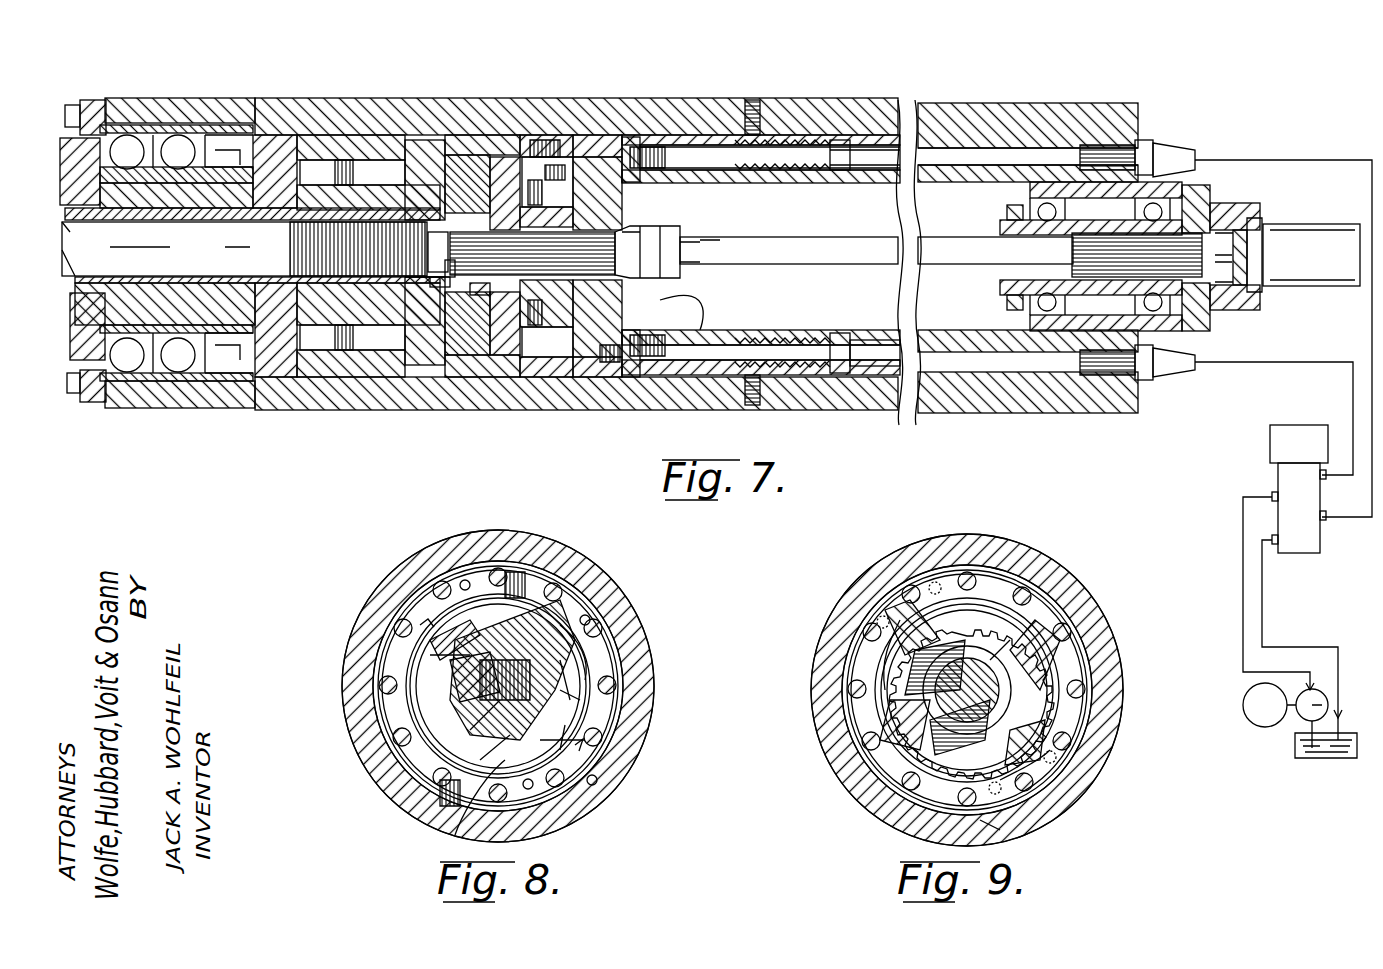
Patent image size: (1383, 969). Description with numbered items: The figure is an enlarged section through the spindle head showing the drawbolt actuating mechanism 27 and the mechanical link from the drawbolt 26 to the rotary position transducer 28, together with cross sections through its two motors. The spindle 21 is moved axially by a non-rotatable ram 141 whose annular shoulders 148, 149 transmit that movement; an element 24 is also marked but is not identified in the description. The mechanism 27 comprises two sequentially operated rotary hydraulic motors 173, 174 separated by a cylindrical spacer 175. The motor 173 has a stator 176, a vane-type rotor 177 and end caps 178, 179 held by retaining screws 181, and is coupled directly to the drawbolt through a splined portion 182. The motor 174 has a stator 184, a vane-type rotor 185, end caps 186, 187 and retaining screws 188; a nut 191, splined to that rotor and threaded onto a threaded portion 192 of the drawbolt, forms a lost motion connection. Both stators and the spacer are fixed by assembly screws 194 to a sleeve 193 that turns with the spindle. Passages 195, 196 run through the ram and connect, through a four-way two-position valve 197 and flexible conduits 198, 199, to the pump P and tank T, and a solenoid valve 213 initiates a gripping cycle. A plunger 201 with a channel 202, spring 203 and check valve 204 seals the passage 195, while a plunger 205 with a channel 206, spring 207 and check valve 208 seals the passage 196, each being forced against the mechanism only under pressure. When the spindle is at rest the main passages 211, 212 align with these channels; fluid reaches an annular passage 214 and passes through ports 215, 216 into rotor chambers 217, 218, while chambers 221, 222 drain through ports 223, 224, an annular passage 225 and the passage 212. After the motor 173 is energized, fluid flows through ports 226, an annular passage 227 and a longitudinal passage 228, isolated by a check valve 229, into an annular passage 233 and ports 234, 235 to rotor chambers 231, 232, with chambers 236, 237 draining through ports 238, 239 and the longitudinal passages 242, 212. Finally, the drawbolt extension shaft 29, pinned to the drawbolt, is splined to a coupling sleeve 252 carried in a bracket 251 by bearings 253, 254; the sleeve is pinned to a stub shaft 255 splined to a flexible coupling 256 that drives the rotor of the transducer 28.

In FIG. 7, the spindle 21 is at (62, 140).
In FIG. 7, the spindle sleeve 24 is at (412, 290).
In FIG. 7, the drawbolt 26 is at (62, 285).
In FIG. 9, the drawbolt 26 is at (950, 668).
In FIG. 7, the drawbolt actuating mechanism 27 is at (450, 290).
In FIG. 7, the rotary position transducer 28 is at (1310, 288).
In FIG. 7, the drawbolt extension shaft 29 is at (800, 240).
In FIG. 7, the ram 141 is at (128, 87).
In FIG. 7, the annular shoulder 148 is at (78, 370).
In FIG. 7, the annular shoulder 149 is at (705, 304).
In FIG. 7, the rotary hydraulic motor 173 is at (585, 320).
In FIG. 8, the rotary hydraulic motor 173 is at (570, 668).
In FIG. 7, the rotary hydraulic motor 174 is at (300, 135).
In FIG. 9, the rotary hydraulic motor 174 is at (1060, 620).
In FIG. 7, the cylindrical spacer 175 is at (465, 135).
In FIG. 7, the stator 176 is at (550, 365).
In FIG. 8, the stator 176 is at (560, 572).
In FIG. 7, the vane-type rotor 177 is at (615, 197).
In FIG. 8, the vane-type rotor 177 is at (450, 833).
In FIG. 7, the end cap 178 is at (600, 280).
In FIG. 7, the end cap 179 is at (485, 367).
In FIG. 8, the retaining screws 181 is at (410, 625).
In FIG. 7, the splined portion 182 is at (640, 232).
In FIG. 8, the splined portion 182 is at (455, 705).
In FIG. 7, the stator 184 is at (330, 350).
In FIG. 9, the stator 184 is at (980, 565).
In FIG. 9, the vane-type rotor 185 is at (905, 695).
In FIG. 7, the end cap 186 is at (272, 137).
In FIG. 7, the end cap 187 is at (425, 140).
In FIG. 9, the retaining screws 188 is at (1045, 678).
In FIG. 7, the nut 191 is at (300, 330).
In FIG. 9, the nut 191 is at (1020, 690).
In FIG. 7, the threaded portion 192 is at (280, 325).
In FIG. 9, the threaded portion 192 is at (1010, 705).
In FIG. 7, the sleeve 193 is at (150, 375).
In FIG. 8, the assembly screws 194 is at (453, 582).
In FIG. 9, the assembly screws 194 is at (910, 585).
In FIG. 7, the passage 195 is at (1000, 150).
In FIG. 7, the passage 196 is at (955, 360).
In FIG. 7, the hydraulic valve 197 is at (1283, 553).
In FIG. 7, the flexible conduit 198 is at (1280, 160).
In FIG. 7, the flexible conduit 199 is at (1250, 363).
In FIG. 7, the plunger 201 is at (715, 175).
In FIG. 7, the longitudinal channel 202 is at (765, 140).
In FIG. 7, the spring 203 is at (848, 140).
In FIG. 7, the check valve 204 is at (675, 145).
In FIG. 7, the plunger 205 is at (695, 345).
In FIG. 7, the longitudinal channel 206 is at (870, 378).
In FIG. 7, the spring 207 is at (760, 375).
In FIG. 7, the check valve 208 is at (745, 378).
In FIG. 7, the main fluid passage 211 is at (632, 137).
In FIG. 8, the main fluid passage 211 is at (430, 600).
In FIG. 7, the main fluid passage 212 is at (625, 377).
In FIG. 8, the main fluid passage 212 is at (575, 760).
In FIG. 7, the solenoid valve 213 is at (1270, 440).
In FIG. 7, the annular passage 214 is at (645, 135).
In FIG. 8, the annular passage 214 is at (605, 615).
In FIG. 8, the port 215 is at (430, 645).
In FIG. 8, the port 216 is at (565, 752).
In FIG. 8, the rotor chamber 217 is at (440, 672).
In FIG. 8, the rotor chamber 218 is at (590, 735).
In FIG. 8, the rotor chamber 221 is at (480, 765).
In FIG. 8, the rotor chamber 222 is at (520, 600).
In FIG. 8, the port 223 is at (475, 745).
In FIG. 8, the port 224 is at (585, 640).
In FIG. 7, the annular passage 225 is at (590, 365).
In FIG. 8, the annular passage 225 is at (585, 700).
In FIG. 7, the ports 226 is at (640, 147).
In FIG. 7, the annular passage 227 is at (503, 135).
In FIG. 7, the longitudinal passage 228 is at (540, 140).
In FIG. 7, the check valve 229 is at (550, 140).
In FIG. 9, the rotor chamber 231 is at (1035, 730).
In FIG. 9, the rotor chamber 232 is at (900, 620).
In FIG. 7, the annular passage 233 is at (400, 160).
In FIG. 9, the port 234 is at (1060, 790).
In FIG. 9, the port 235 is at (885, 610).
In FIG. 9, the rotor chamber 236 is at (1040, 620).
In FIG. 9, the rotor chamber 237 is at (900, 730).
In FIG. 9, the port 238 is at (940, 585).
In FIG. 9, the port 239 is at (990, 818).
In FIG. 7, the longitudinal passage 242 is at (440, 287).
In FIG. 7, the bracket 251 is at (1185, 198).
In FIG. 7, the coupling sleeve 252 is at (1005, 280).
In FIG. 7, the bearing 253 is at (1040, 300).
In FIG. 7, the bearing 254 is at (1190, 331).
In FIG. 7, the stub shaft 255 is at (1230, 305).
In FIG. 7, the flexible coupling 256 is at (1245, 218).